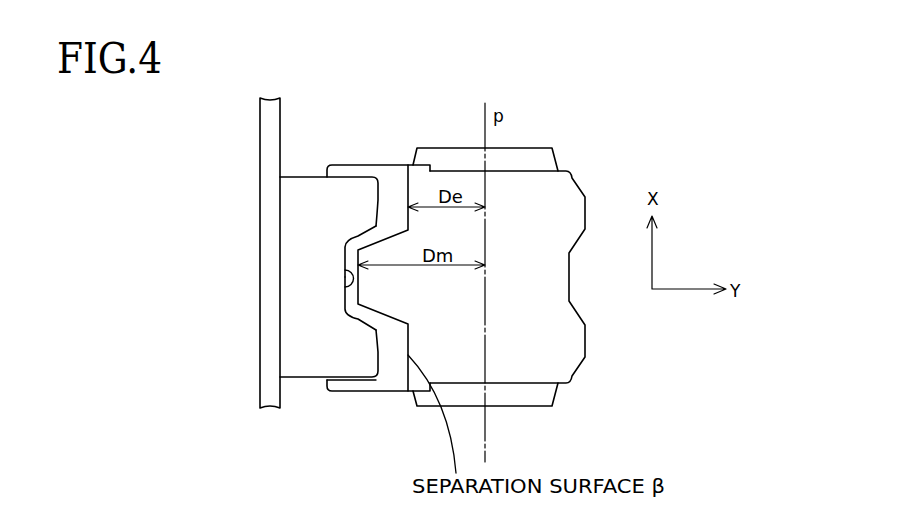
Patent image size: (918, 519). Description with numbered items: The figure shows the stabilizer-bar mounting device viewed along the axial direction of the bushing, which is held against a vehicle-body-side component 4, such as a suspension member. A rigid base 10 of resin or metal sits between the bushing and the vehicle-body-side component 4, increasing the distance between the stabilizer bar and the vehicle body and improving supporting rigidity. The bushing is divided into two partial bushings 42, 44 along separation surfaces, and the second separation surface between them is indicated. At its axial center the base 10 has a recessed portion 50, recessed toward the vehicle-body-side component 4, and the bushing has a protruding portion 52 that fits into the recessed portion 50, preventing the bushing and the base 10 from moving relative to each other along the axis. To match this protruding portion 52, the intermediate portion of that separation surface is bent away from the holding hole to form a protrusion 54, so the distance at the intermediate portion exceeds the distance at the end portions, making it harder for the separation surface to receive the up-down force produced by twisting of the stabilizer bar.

The vehicle-body-side component 4 is at (268, 144).
The base 10 is at (298, 338).
The partial bushing 42 is at (497, 355).
The partial bushing 44 is at (387, 377).
The recessed portion 50 is at (347, 270).
The protruding portion 52 is at (348, 253).
The protrusion 54 is at (345, 300).